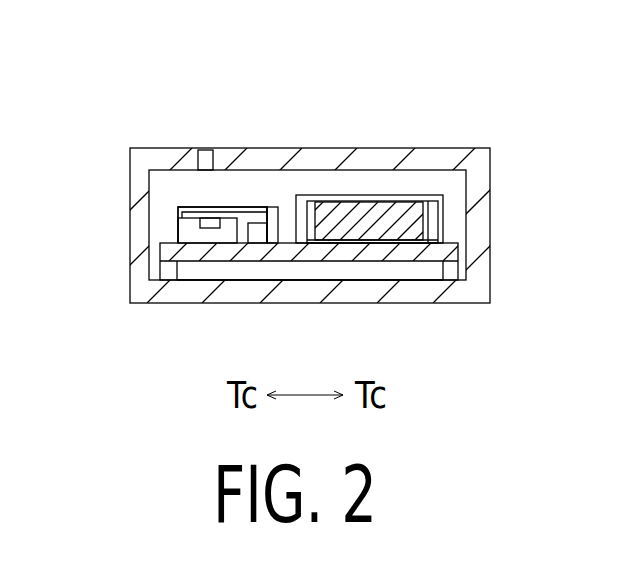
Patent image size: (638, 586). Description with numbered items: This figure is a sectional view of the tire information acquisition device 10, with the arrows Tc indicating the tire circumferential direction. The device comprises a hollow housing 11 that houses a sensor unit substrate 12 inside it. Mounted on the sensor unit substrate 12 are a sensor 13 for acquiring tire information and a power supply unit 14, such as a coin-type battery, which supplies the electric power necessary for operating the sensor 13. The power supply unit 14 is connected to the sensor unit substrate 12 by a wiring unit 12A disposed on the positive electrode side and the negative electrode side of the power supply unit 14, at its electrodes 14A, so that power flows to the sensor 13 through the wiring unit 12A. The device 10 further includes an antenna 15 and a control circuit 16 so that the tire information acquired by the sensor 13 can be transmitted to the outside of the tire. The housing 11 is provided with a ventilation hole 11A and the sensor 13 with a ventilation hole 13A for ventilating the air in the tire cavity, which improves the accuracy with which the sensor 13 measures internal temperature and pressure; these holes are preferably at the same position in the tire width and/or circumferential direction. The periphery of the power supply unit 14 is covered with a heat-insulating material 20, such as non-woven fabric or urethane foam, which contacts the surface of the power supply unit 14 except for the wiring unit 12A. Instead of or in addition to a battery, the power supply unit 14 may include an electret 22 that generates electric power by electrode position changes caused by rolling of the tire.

The tire information acquisition device 10 is at (455, 147).
The housing 11 is at (138, 226).
The ventilation hole 11A is at (210, 155).
The sensor unit substrate 12 is at (292, 268).
The wiring unit 12A is at (366, 243).
The sensor 13 is at (215, 207).
The ventilation hole 13A is at (197, 205).
The power supply unit 14 is at (402, 197).
The electrodes 14A is at (321, 195).
The antenna 15 is at (261, 207).
The control circuit 16 is at (252, 267).
The heat-insulating material 20 is at (441, 208).
The electret 22 is at (318, 195).